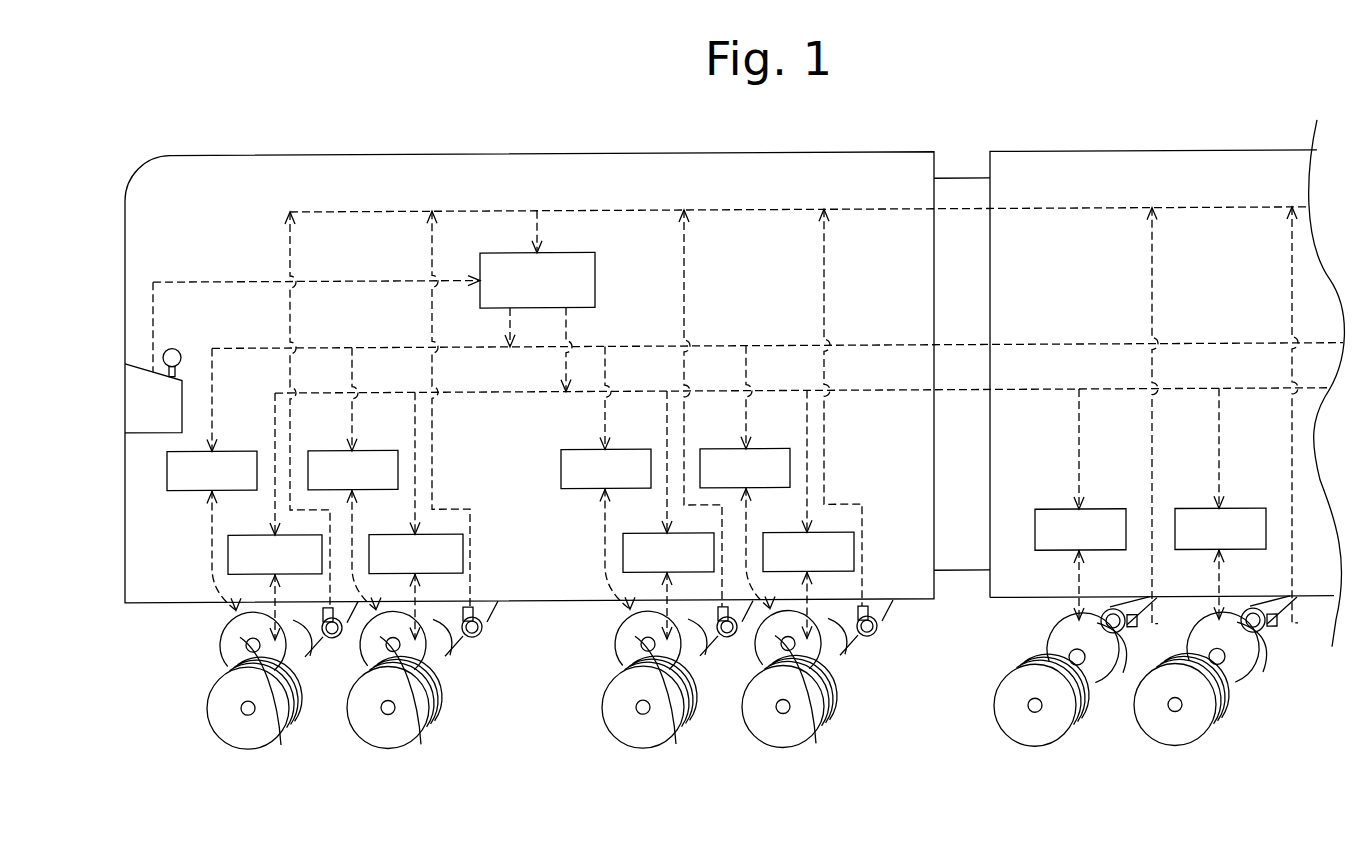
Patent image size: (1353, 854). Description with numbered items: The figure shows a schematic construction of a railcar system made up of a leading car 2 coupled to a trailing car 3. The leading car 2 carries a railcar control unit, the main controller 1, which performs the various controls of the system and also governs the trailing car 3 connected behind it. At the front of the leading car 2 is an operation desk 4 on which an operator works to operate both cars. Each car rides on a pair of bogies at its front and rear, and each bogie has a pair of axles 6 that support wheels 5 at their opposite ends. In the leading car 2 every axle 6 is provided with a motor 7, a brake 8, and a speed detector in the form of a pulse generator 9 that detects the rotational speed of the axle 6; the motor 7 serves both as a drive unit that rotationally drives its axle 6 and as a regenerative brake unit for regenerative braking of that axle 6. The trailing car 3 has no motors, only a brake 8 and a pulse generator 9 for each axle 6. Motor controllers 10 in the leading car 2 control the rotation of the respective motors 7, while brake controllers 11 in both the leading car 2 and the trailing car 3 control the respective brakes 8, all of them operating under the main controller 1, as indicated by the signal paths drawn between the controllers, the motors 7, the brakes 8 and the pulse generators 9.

The main controller 1 is at (597, 271).
The leading car 2 is at (525, 155).
The trailing car 3 is at (1172, 155).
The operation desk 4 is at (150, 434).
The wheel 5 is at (711, 726).
The axle 6 is at (547, 666).
The motor 7 is at (532, 707).
The brake 8 is at (748, 687).
The pulse generator 9 is at (801, 655).
The motor controller 10 is at (239, 451).
The brake controller 11 is at (259, 534).